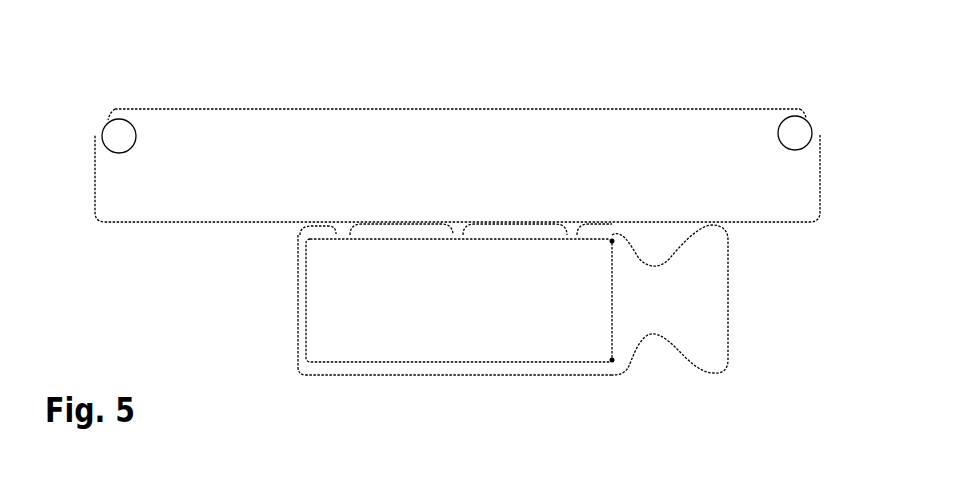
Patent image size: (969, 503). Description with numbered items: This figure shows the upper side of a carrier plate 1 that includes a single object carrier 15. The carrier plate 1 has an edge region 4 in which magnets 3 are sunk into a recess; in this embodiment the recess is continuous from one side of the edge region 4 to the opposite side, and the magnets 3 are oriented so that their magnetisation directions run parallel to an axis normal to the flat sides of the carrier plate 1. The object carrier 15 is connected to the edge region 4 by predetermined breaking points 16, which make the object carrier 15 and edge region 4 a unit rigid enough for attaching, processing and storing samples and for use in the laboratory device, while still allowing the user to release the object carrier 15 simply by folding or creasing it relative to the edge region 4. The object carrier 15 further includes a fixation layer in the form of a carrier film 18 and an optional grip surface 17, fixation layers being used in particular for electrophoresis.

The carrier plate 1 is at (726, 74).
The magnets 3 is at (122, 134).
The edge region 4 is at (325, 133).
The object carrier 15 is at (615, 418).
The predetermined breaking points 16 is at (343, 232).
The grip surface 17 is at (705, 298).
The carrier film 18 is at (405, 343).